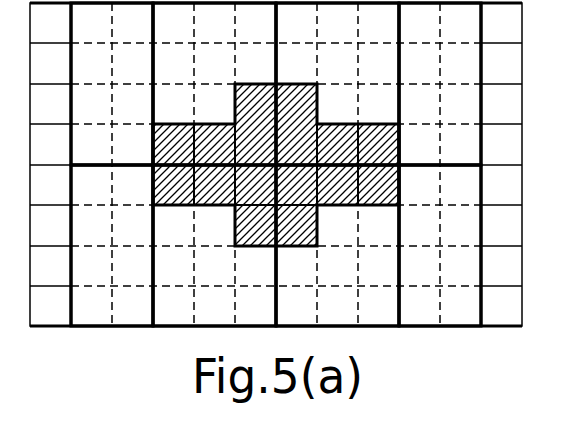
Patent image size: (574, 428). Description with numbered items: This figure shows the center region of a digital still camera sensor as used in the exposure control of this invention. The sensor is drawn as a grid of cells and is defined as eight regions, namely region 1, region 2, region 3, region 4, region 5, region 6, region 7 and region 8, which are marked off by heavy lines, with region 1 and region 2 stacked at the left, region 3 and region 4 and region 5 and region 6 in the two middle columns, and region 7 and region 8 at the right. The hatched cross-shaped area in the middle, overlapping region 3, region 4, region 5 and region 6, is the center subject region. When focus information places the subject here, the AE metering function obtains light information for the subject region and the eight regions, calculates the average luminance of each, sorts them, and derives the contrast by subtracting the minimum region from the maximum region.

The region 1 is at (112, 84).
The region 2 is at (112, 245).
The region 3 is at (214, 84).
The region 4 is at (214, 245).
The region 5 is at (337, 84).
The region 6 is at (337, 245).
The region 7 is at (440, 84).
The region 8 is at (440, 245).